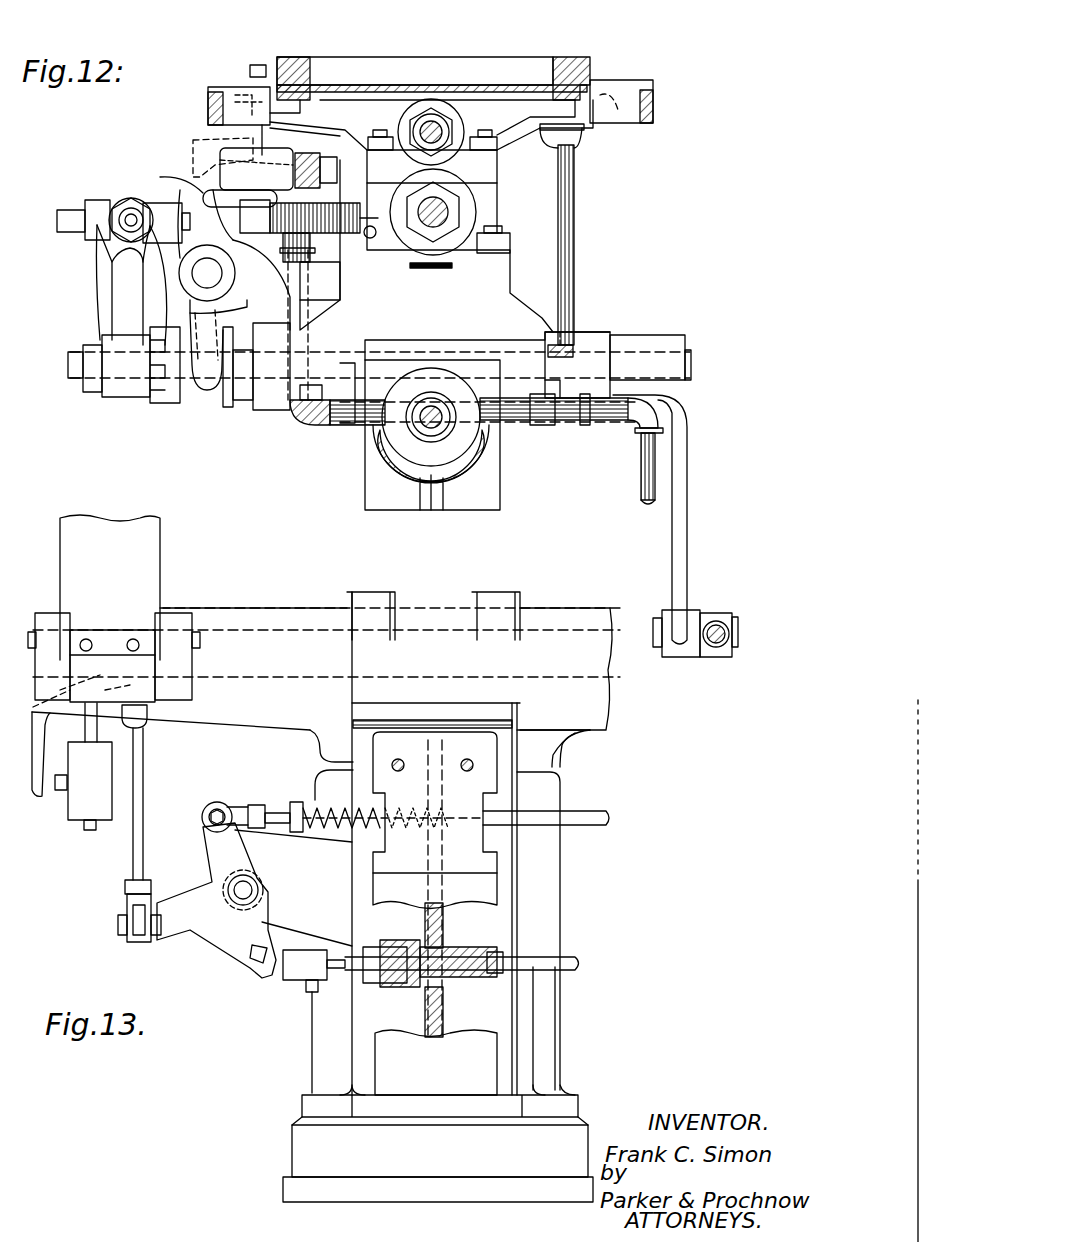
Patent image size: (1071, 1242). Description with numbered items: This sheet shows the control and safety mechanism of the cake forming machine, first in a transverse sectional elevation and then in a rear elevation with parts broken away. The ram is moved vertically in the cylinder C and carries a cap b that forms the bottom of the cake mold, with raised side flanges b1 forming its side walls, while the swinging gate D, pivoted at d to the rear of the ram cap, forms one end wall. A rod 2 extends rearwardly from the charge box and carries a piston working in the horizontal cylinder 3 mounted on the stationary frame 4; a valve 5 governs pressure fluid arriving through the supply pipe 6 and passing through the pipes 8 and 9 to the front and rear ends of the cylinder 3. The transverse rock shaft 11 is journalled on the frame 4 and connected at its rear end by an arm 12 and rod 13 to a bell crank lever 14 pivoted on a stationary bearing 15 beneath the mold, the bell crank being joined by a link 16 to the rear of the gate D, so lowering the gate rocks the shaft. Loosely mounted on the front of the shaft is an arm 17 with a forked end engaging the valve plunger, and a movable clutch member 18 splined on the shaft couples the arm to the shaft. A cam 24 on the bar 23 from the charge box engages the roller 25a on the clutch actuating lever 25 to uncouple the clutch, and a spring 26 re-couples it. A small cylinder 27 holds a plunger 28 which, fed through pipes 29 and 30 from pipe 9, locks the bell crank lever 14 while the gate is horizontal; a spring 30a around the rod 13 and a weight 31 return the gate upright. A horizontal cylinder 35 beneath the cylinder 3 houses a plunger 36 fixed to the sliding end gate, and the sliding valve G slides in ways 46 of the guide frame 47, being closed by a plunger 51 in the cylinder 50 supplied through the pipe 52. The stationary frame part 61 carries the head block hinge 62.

In FIG. 12, the rod 2 is at (445, 212).
In FIG. 12, the horizontal cylinder 3 is at (466, 222).
In FIG. 12, the stationary frame 4 is at (362, 278).
In FIG. 12, the valve 5 is at (92, 200).
In FIG. 12, the supply pipe 6 is at (62, 238).
In FIG. 12, the pipe 8 is at (190, 198).
In FIG. 12, the pipe 9 is at (287, 240).
In FIG. 12, the transverse rock shaft 11 is at (70, 374).
In FIG. 12, the arm 12 is at (688, 462).
In FIG. 12, the rod 13 is at (718, 623).
In FIG. 13, the rod 13 is at (583, 811).
In FIG. 13, the bell crank lever 14 is at (216, 890).
In FIG. 13, the stationary bearing 15 is at (338, 866).
In FIG. 13, the rod or link 16 is at (140, 787).
In FIG. 12, the arm 17 is at (115, 300).
In FIG. 12, the movable clutch member 18 is at (212, 385).
In FIG. 12, the bar 23 is at (340, 160).
In FIG. 12, the cam 24 is at (320, 150).
In FIG. 12, the clutch actuating lever 25 is at (195, 312).
In FIG. 12, the roller 25a is at (209, 157).
In FIG. 12, the spring 26 is at (310, 208).
In FIG. 13, the small cylinder 27 is at (468, 978).
In FIG. 13, the plunger 28 is at (362, 968).
In FIG. 12, the pipe 29 is at (644, 470).
In FIG. 13, the pipe 29 is at (566, 968).
In FIG. 12, the pipe 30 is at (302, 420).
In FIG. 13, the spring 30a is at (323, 797).
In FIG. 13, the weight 31 is at (83, 766).
In FIG. 12, the horizontal cylinder 35 is at (400, 418).
In FIG. 12, the plunger 36 is at (434, 404).
In FIG. 12, the ways 46 is at (575, 57).
In FIG. 12, the guide frame 47 is at (208, 112).
In FIG. 12, the cylinder 50 is at (412, 104).
In FIG. 12, the plunger 51 is at (446, 128).
In FIG. 12, the pipe 52 is at (575, 205).
In FIG. 13, the stationary frame part 61 is at (485, 862).
In FIG. 13, the hinge 62 is at (478, 603).
In FIG. 12, the sliding valve G is at (458, 118).
In FIG. 13, the swinging gate D is at (155, 552).
In FIG. 13, the pivot d is at (193, 640).
In FIG. 13, the upper end or cap b is at (326, 704).
In FIG. 13, the raised side flanges b1 is at (580, 615).
In FIG. 13, the cylinder C is at (438, 897).